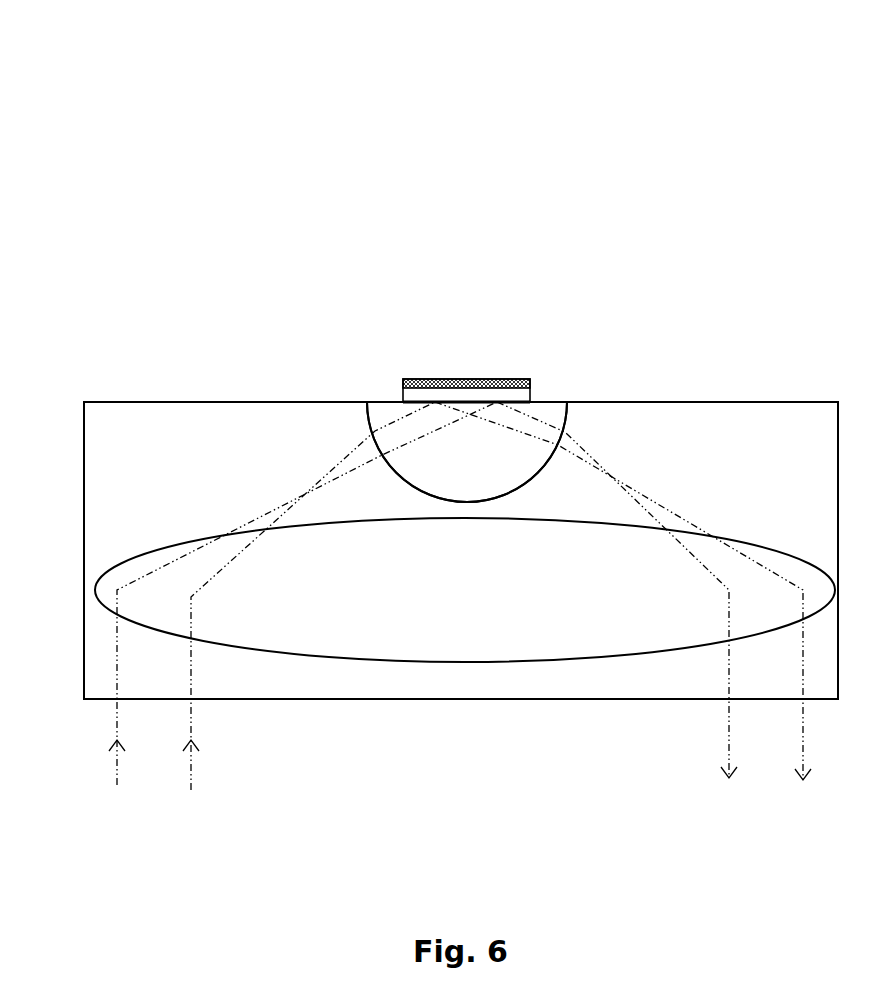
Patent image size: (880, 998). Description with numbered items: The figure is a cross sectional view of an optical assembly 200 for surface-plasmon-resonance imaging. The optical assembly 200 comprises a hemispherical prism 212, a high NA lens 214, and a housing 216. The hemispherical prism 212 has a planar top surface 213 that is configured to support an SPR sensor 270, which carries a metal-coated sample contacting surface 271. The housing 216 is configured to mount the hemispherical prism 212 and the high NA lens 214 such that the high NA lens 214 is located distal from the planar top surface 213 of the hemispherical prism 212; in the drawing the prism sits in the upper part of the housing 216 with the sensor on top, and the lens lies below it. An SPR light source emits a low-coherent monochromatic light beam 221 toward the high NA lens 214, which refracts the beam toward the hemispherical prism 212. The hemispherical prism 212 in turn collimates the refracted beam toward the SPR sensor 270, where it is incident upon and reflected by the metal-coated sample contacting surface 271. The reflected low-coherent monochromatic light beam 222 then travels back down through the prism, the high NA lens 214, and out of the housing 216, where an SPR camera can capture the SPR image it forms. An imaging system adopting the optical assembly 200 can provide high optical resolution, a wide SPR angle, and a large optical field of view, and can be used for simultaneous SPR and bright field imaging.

The optical assembly 200 is at (178, 187).
The hemispherical prism 212 is at (467, 452).
The planar top surface 213 is at (558, 400).
The high NA lens 214 is at (465, 590).
The housing 216 is at (690, 400).
The low-coherent monochromatic light beam 221 is at (205, 733).
The low-coherent monochromatic light beam 222 is at (719, 729).
The SPR sensor 270 is at (394, 381).
The metal-coated sample contacting surface 271 is at (440, 378).